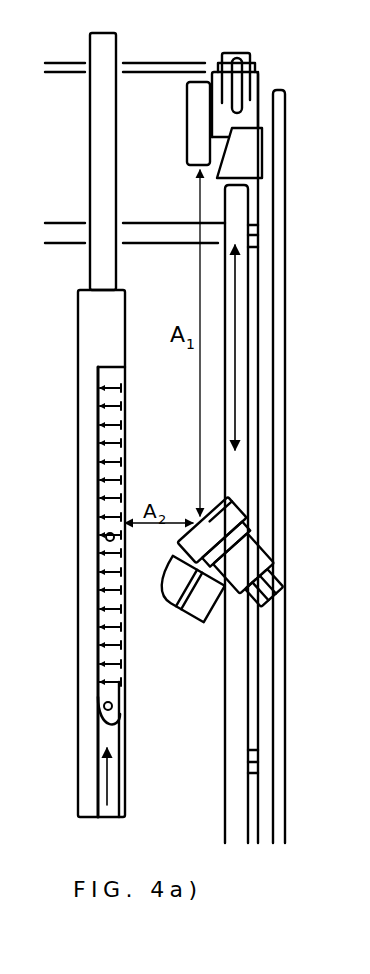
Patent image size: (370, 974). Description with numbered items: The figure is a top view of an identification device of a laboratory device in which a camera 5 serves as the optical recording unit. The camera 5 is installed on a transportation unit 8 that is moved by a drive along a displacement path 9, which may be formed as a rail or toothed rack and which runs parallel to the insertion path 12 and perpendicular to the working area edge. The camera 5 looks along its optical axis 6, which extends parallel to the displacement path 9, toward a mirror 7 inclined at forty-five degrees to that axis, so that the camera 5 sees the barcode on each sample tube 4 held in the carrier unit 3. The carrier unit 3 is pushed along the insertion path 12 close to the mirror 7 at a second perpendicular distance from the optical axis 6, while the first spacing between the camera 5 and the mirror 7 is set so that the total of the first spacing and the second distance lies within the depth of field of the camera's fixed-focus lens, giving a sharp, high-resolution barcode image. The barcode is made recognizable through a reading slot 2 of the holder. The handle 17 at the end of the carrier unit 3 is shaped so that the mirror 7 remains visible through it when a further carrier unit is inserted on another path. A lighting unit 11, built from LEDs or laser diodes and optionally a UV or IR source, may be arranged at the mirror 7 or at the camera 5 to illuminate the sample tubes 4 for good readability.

The reading slot 2 is at (124, 400).
The carrier unit 3 is at (104, 705).
The sample tube 4 is at (106, 538).
The camera 5 is at (200, 98).
The optical axis 6 is at (199, 209).
The mirror 7 is at (226, 508).
The transportation unit 8 is at (235, 83).
The displacement path 9 is at (235, 340).
The lighting unit 11 is at (200, 157).
The insertion path 12 is at (105, 777).
The handle 17 is at (108, 718).